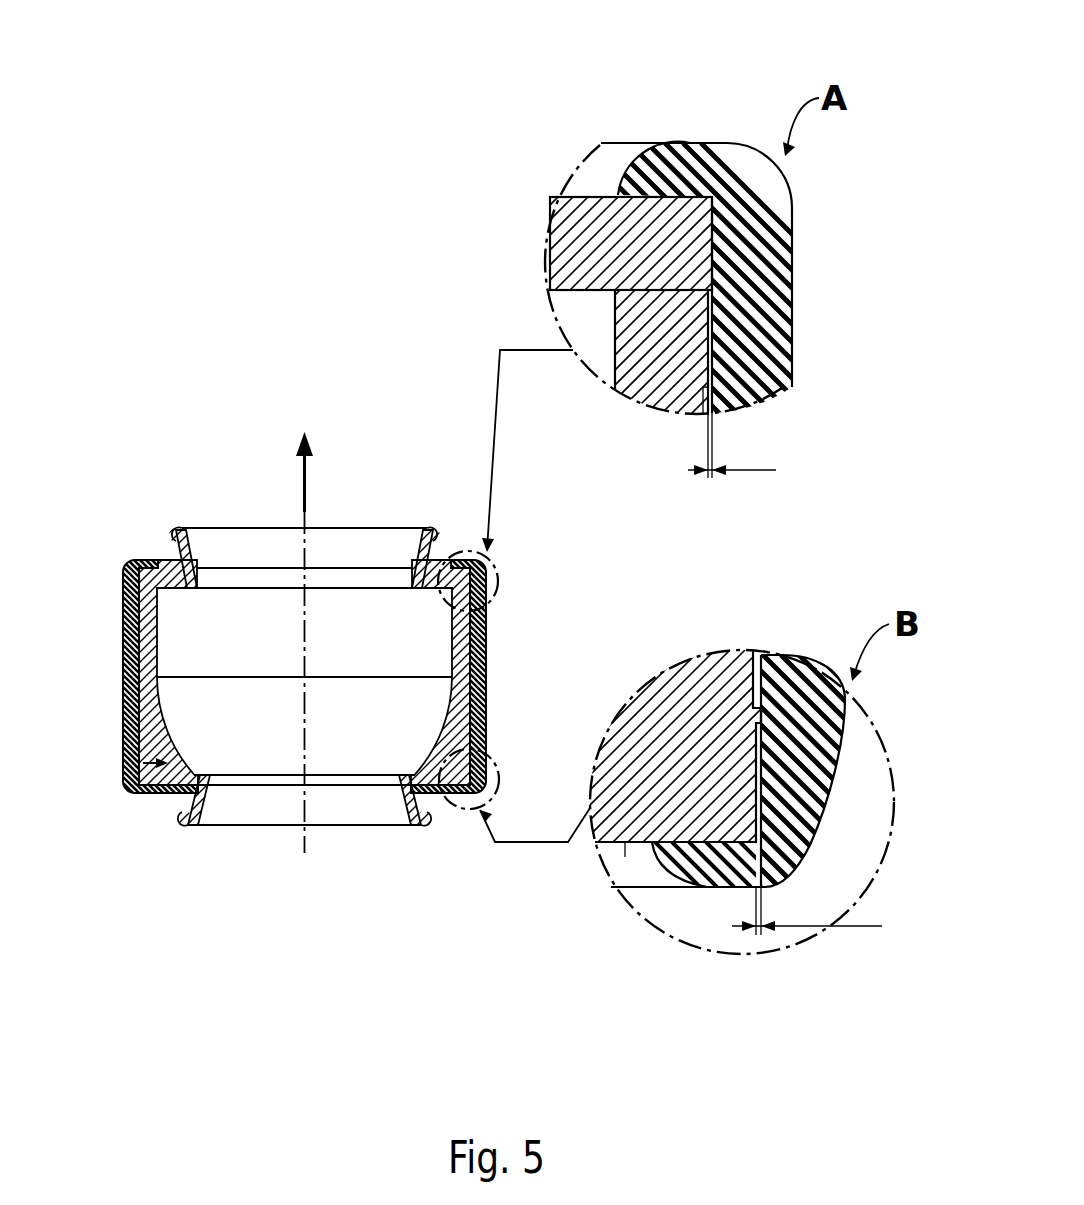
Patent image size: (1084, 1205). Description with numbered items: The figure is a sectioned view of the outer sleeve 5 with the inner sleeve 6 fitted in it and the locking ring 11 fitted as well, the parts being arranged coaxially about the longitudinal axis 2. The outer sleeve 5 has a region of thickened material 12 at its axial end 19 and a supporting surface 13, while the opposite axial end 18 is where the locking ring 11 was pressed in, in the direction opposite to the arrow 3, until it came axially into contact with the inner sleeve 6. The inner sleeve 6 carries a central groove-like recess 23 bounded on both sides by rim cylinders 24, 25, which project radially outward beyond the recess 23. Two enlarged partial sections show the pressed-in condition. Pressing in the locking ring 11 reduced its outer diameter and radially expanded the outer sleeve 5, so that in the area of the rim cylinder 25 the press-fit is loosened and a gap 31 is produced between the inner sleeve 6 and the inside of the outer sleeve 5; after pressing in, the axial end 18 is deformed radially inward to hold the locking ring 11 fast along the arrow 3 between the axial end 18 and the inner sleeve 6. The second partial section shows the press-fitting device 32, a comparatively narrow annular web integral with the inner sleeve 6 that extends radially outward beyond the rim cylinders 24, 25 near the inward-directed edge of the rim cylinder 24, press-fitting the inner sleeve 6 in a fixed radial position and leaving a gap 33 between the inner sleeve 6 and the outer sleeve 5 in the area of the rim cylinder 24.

The longitudinal axis 2 is at (304, 842).
The arrow 3 is at (300, 472).
The outer sleeve 5 is at (123, 607).
The inner sleeve 6 is at (148, 700).
The locking ring 11 is at (146, 560).
The thickened material 12 is at (125, 779).
The supporting surface 13 is at (611, 887).
The axial end 18 is at (658, 157).
The axial end 19 is at (681, 873).
The recess 23 is at (782, 658).
The rim cylinder 24 is at (768, 796).
The rim cylinder 25 is at (718, 316).
The gap 31 is at (752, 451).
The press-fitting device 32 is at (765, 709).
The gap 33 is at (828, 916).